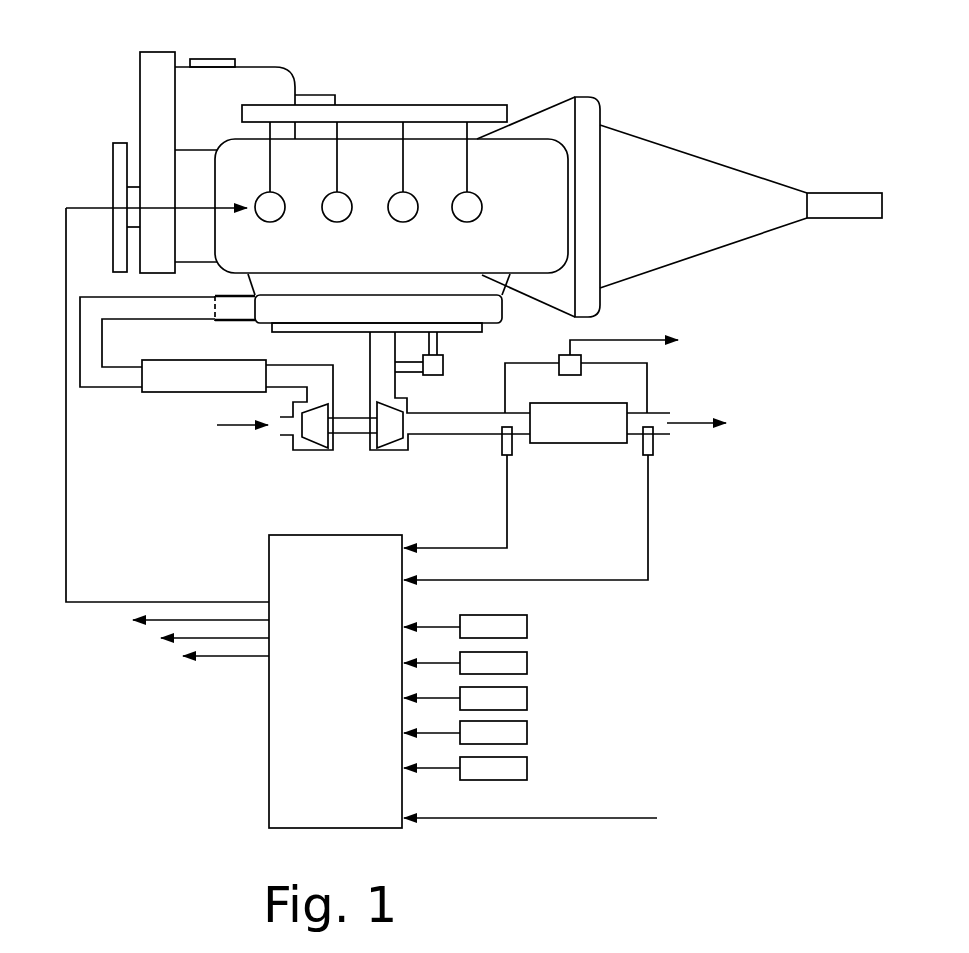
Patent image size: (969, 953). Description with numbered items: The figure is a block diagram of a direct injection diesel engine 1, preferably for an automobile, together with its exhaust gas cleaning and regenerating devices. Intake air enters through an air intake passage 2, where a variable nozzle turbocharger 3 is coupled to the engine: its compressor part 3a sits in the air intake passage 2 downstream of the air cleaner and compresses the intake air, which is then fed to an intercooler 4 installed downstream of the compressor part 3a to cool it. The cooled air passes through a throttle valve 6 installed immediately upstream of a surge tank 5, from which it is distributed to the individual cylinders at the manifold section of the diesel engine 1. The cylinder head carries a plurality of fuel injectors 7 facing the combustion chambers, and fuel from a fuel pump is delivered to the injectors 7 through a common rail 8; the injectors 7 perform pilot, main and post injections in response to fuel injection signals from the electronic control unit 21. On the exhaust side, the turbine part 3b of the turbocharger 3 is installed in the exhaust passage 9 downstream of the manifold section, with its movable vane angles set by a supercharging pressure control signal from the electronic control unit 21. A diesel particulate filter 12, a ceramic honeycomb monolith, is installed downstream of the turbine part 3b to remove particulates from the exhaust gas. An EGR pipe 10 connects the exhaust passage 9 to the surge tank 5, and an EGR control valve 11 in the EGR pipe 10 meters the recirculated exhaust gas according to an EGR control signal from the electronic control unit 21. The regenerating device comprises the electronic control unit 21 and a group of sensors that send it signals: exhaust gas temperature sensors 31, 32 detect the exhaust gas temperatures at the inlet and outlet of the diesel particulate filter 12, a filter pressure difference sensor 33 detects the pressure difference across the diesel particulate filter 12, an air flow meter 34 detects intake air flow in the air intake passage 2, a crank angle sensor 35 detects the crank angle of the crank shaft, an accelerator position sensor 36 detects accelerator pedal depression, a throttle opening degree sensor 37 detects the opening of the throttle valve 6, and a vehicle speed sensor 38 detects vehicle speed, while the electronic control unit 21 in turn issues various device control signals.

The diesel engine 1 is at (537, 72).
The air intake passage 2 is at (80, 357).
The variable nozzle turbocharger 3 is at (340, 447).
The compressor part 3a is at (318, 452).
The turbine part 3b is at (382, 450).
The intercooler 4 is at (190, 392).
The surge tank 5 is at (498, 320).
The throttle valve 6 is at (245, 302).
The fuel injectors 7 is at (275, 213).
The common rail 8 is at (433, 105).
The exhaust passage 9 is at (445, 436).
The EGR pipe 10 is at (438, 345).
The EGR control valve 11 is at (444, 374).
The diesel particulate filter 12 is at (580, 443).
The electronic control unit 21 is at (310, 535).
The exhaust gas temperature sensor 31 is at (515, 450).
The exhaust gas temperature sensor 32 is at (655, 445).
The filter pressure difference sensor 33 is at (581, 372).
The air flow meter 34 is at (528, 625).
The crank angle sensor 35 is at (528, 661).
The accelerator position sensor 36 is at (528, 696).
The throttle opening degree sensor 37 is at (528, 731).
The vehicle speed sensor 38 is at (528, 766).